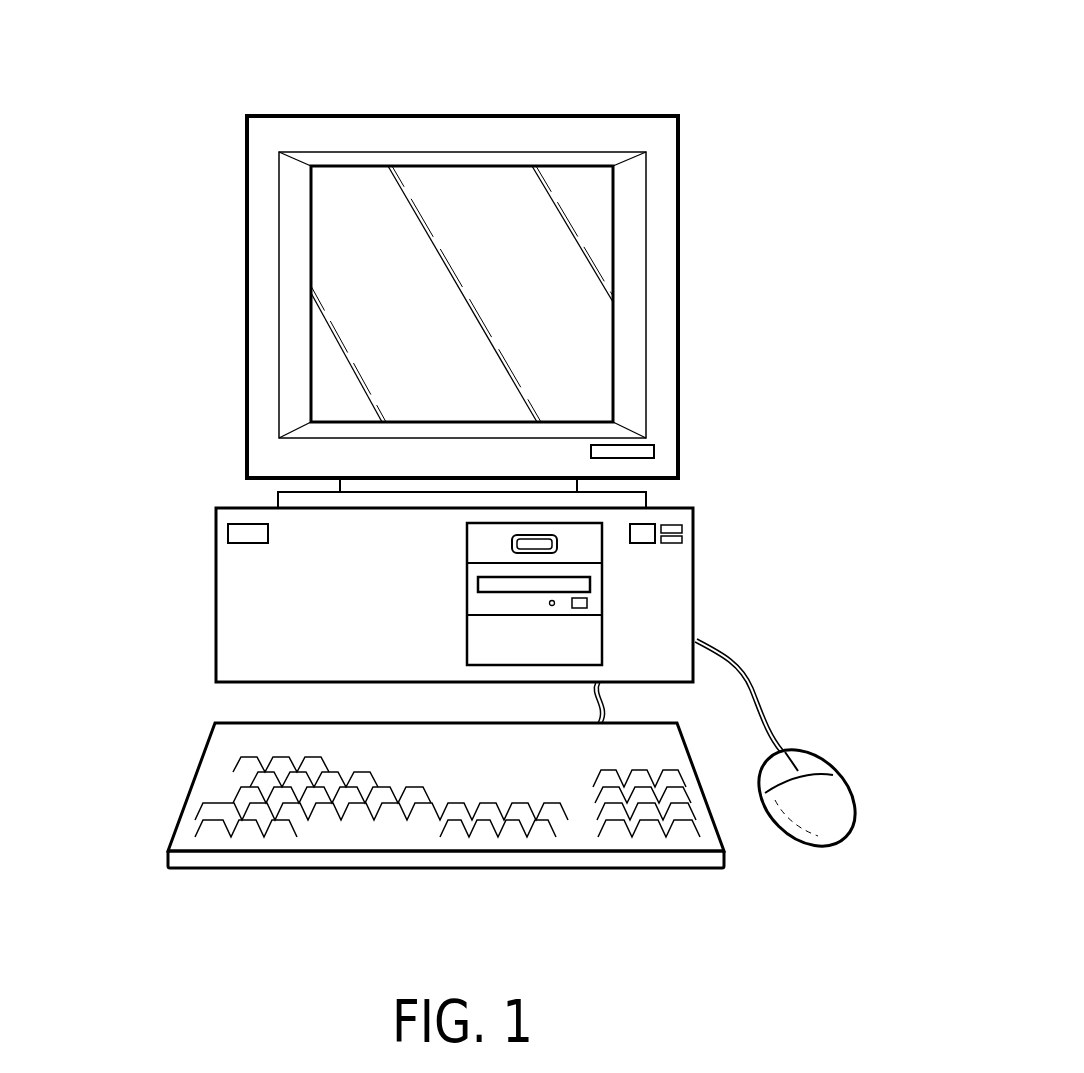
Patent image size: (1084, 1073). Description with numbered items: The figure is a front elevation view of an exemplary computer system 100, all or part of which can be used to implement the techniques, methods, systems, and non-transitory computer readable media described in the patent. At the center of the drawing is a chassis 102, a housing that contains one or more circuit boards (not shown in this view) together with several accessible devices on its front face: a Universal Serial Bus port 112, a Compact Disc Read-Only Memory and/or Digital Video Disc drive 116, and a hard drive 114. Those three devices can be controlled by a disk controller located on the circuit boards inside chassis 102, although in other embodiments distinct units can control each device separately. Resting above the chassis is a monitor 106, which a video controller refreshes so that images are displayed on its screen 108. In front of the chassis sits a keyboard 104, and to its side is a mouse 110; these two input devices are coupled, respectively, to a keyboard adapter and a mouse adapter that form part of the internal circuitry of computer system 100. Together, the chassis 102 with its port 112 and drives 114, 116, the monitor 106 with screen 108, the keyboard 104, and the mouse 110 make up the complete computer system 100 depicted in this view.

The computer system 100 is at (672, 84).
The chassis 102 is at (216, 597).
The keyboard 104 is at (193, 782).
The monitor 106 is at (334, 116).
The screen 108 is at (366, 300).
The mouse 110 is at (828, 790).
The Universal Serial Bus (USB) port 112 is at (557, 540).
The hard drive 114 is at (590, 637).
The CD-ROM and/or DVD drive 116 is at (602, 594).